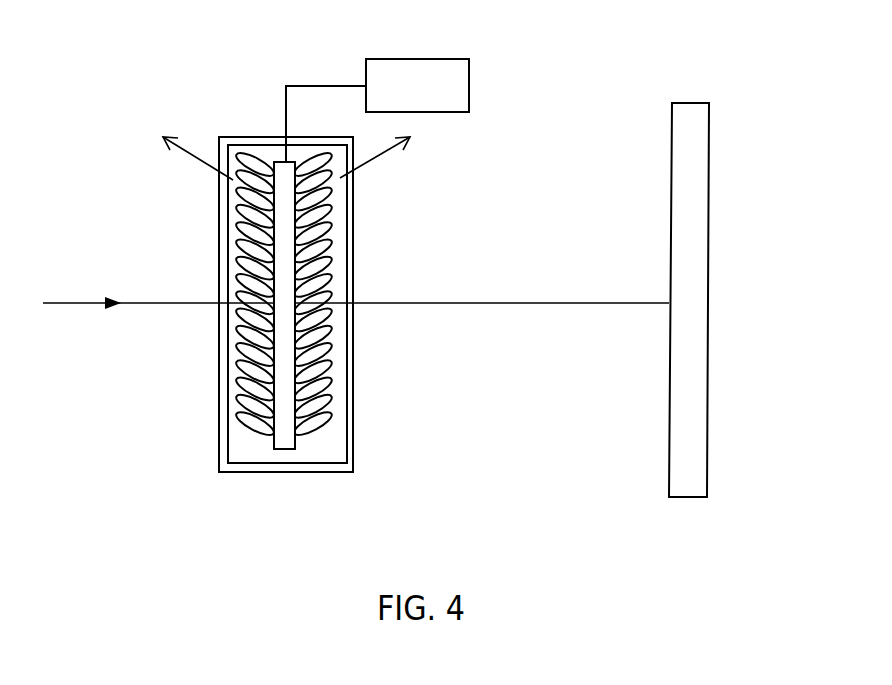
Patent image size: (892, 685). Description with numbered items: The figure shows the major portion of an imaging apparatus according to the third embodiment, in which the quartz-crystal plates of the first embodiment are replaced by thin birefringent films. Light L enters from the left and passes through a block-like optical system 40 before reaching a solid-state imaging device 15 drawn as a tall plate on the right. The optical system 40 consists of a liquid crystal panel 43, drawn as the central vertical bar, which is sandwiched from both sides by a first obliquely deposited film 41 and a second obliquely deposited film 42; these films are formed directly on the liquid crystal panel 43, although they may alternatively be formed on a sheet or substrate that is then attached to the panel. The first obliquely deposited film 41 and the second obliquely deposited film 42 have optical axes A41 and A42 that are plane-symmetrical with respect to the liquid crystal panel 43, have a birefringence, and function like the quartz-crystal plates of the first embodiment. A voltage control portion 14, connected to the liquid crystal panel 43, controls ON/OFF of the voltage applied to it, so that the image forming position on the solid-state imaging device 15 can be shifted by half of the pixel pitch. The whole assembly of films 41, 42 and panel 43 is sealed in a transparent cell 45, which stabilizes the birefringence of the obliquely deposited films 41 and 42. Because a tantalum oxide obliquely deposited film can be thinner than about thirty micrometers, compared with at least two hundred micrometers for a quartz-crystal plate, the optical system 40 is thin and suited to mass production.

The voltage control portion 14 is at (422, 68).
The solid-state imaging device 15 is at (700, 186).
The block-like optical system 40 is at (285, 331).
The first obliquely deposited film 41 is at (252, 432).
The second obliquely deposited film 42 is at (313, 432).
The liquid crystal panel 43 is at (286, 440).
The transparent cell 45 is at (355, 427).
The optical axis of first obliquely deposited film A41 is at (203, 167).
The optical axis of second obliquely deposited film A42 is at (366, 168).
The light beam L is at (75, 305).